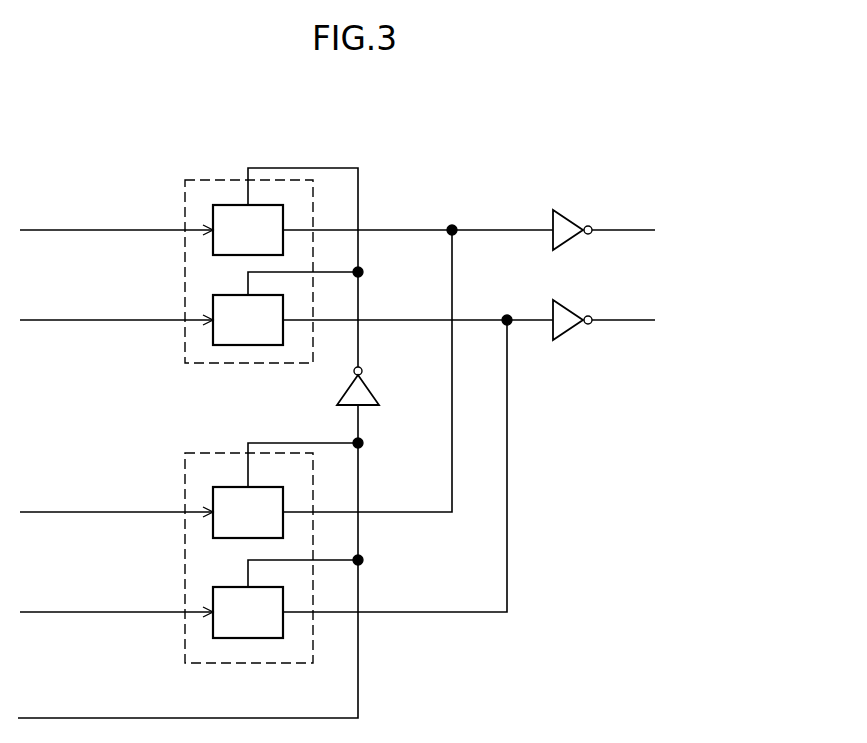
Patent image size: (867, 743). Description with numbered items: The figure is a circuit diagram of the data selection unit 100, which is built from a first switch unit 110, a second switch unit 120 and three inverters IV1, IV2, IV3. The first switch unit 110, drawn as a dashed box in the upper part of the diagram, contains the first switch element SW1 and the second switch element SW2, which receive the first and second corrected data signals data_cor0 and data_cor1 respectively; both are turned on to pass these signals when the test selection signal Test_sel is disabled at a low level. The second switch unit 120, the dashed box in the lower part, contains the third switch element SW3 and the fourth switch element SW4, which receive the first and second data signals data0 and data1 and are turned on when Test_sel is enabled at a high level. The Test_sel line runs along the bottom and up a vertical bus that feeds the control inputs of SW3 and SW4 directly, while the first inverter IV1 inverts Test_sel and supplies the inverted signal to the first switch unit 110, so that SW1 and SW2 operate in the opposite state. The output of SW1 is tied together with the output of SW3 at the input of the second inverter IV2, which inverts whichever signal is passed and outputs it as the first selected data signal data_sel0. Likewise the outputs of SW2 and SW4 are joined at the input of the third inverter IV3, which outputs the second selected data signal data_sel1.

The data selection unit 100 is at (732, 131).
The first switch unit 110 is at (205, 180).
The second switch unit 120 is at (205, 453).
The first inverter IV1 is at (367, 390).
The second inverter IV2 is at (568, 222).
The third inverter IV3 is at (568, 312).
The first switch element SW1 is at (248, 230).
The second switch element SW2 is at (248, 320).
The third switch element SW3 is at (248, 512).
The fourth switch element SW4 is at (248, 612).